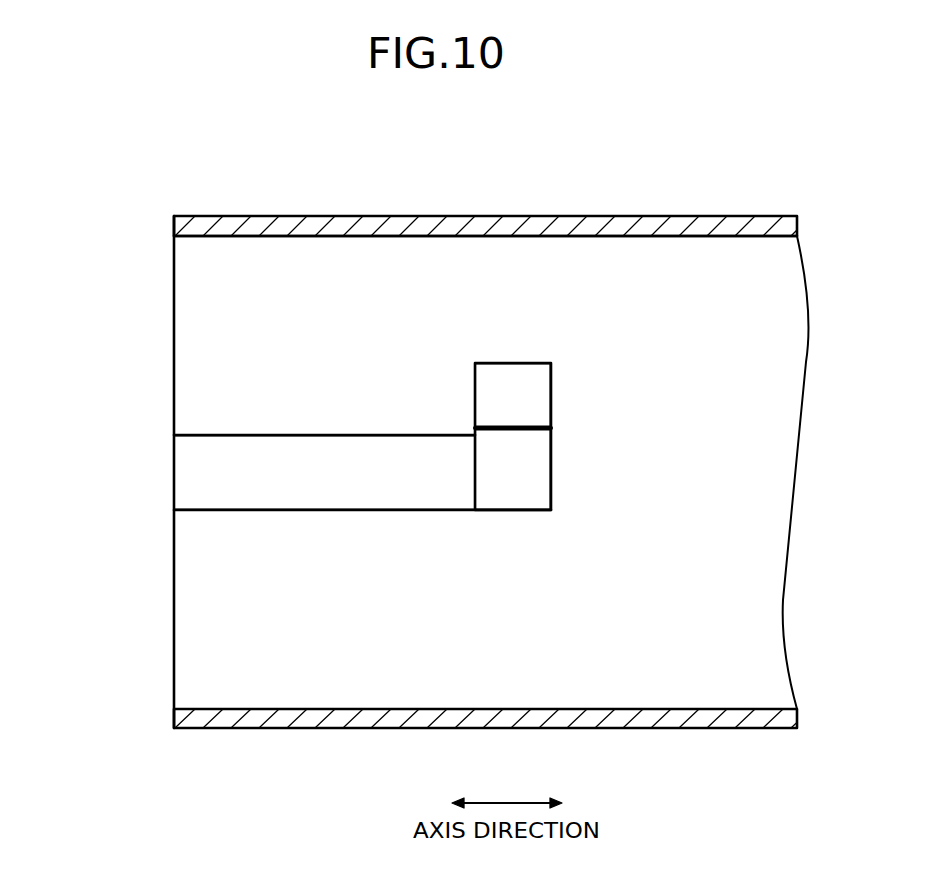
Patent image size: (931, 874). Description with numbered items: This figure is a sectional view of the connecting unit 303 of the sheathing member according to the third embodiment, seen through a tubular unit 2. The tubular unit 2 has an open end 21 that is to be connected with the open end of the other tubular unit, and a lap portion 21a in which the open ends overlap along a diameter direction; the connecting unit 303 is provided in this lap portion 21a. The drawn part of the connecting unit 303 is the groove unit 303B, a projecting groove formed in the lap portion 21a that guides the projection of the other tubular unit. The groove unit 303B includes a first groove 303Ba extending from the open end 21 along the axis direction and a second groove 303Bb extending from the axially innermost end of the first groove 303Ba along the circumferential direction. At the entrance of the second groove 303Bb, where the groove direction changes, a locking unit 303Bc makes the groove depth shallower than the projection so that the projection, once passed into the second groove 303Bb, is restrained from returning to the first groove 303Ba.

The tubular unit 2 is at (622, 216).
The open end 21 is at (423, 216).
The lap portion 21a is at (523, 216).
The connecting unit 303 is at (309, 469).
The groove unit 303B is at (228, 436).
The first groove 303Ba is at (288, 436).
The second groove 303Bb is at (475, 394).
The locking unit 303Bc is at (508, 431).